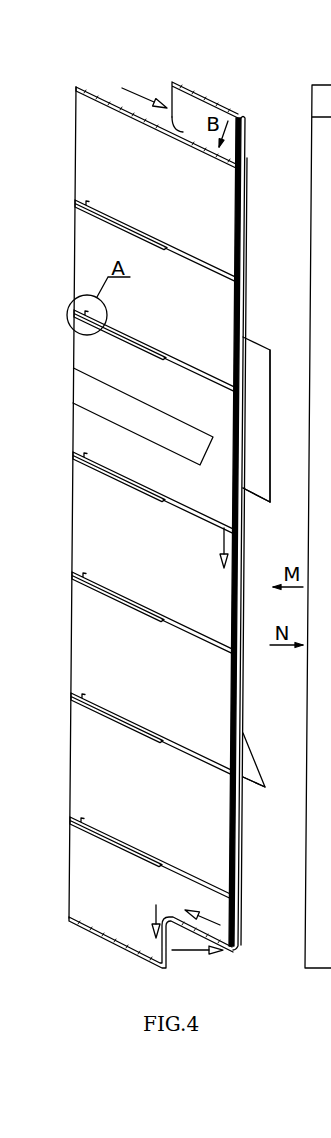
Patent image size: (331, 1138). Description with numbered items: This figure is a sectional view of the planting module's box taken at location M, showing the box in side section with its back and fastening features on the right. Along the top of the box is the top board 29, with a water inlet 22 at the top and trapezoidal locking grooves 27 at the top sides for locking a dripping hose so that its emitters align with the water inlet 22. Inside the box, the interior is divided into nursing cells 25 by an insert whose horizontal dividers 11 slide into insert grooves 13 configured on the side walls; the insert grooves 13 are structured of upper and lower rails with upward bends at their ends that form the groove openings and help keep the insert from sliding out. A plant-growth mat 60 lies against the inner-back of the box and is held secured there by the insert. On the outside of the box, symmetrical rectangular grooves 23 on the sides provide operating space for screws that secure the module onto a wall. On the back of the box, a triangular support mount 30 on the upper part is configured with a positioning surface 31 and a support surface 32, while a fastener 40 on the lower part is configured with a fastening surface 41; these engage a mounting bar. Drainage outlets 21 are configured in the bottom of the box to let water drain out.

The horizontal dividers 11 is at (177, 252).
The insert grooves 13 is at (77, 193).
The drainage outlets 21 is at (87, 903).
The water inlet 22 is at (197, 104).
The rectangular grooves 23 is at (73, 383).
The nursing cells 25 is at (103, 555).
The locking grooves 27 is at (176, 122).
The top board 29 is at (123, 109).
The support mount 30 is at (255, 332).
The positioning surface 31 is at (260, 353).
The support surface 32 is at (250, 493).
The fastener 40 is at (253, 743).
The fastening surface 41 is at (252, 783).
The plant-growth mat 60 is at (235, 207).